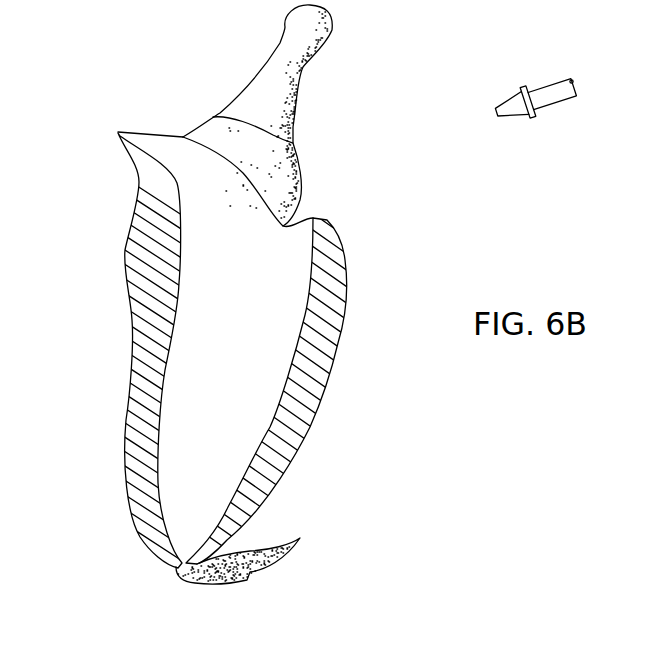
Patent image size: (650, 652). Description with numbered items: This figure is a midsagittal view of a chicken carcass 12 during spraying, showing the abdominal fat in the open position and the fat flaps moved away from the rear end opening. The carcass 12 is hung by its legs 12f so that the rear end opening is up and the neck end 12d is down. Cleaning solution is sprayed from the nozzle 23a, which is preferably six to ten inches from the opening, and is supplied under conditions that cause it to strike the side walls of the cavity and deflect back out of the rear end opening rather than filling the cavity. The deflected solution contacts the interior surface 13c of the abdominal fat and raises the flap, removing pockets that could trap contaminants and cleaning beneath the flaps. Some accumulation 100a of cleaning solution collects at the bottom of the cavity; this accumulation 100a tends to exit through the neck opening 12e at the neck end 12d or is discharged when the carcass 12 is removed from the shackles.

The chicken carcass 12 is at (216, 324).
The neck end 12d is at (157, 552).
The neck opening 12e is at (165, 563).
The legs 12f is at (334, 23).
The interior surface of first abdominal fat flap 13c is at (257, 157).
The accumulation of cleaning solution 100a is at (212, 508).
The nozzle 23a is at (523, 85).